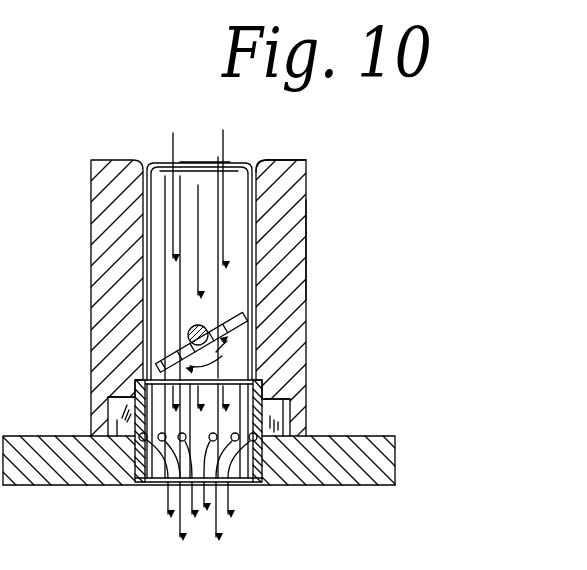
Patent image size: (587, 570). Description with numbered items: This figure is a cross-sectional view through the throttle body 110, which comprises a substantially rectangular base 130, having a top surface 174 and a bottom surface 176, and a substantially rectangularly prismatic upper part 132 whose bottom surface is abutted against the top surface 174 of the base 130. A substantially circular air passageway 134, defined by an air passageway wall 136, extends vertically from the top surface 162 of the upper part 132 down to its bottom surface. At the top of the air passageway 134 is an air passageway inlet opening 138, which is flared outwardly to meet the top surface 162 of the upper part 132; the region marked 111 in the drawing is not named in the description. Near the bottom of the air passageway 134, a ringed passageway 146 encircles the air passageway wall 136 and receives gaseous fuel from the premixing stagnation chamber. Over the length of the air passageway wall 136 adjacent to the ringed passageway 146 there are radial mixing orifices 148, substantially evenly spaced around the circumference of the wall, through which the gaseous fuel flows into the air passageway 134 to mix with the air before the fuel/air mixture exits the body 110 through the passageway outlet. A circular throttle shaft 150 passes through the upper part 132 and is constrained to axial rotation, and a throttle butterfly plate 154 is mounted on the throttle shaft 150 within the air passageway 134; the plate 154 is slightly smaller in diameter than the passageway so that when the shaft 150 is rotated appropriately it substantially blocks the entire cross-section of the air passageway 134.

The throttle body 110 is at (307, 248).
The inlet opening 111 is at (176, 146).
The base 130 is at (367, 465).
The upper part 132 is at (307, 228).
The air passageway 134 is at (163, 198).
The air passageway wall 136 is at (308, 163).
The air passageway inlet opening 138 is at (145, 161).
The ringed passageway 146 is at (287, 412).
The radial mixing orifice 148 is at (147, 482).
The throttle shaft 150 is at (247, 316).
The throttle butterfly plate 154 is at (213, 324).
The top surface of the upper part 162 is at (284, 164).
The top surface of the base 174 is at (38, 436).
The bottom surface of the base 176 is at (72, 485).